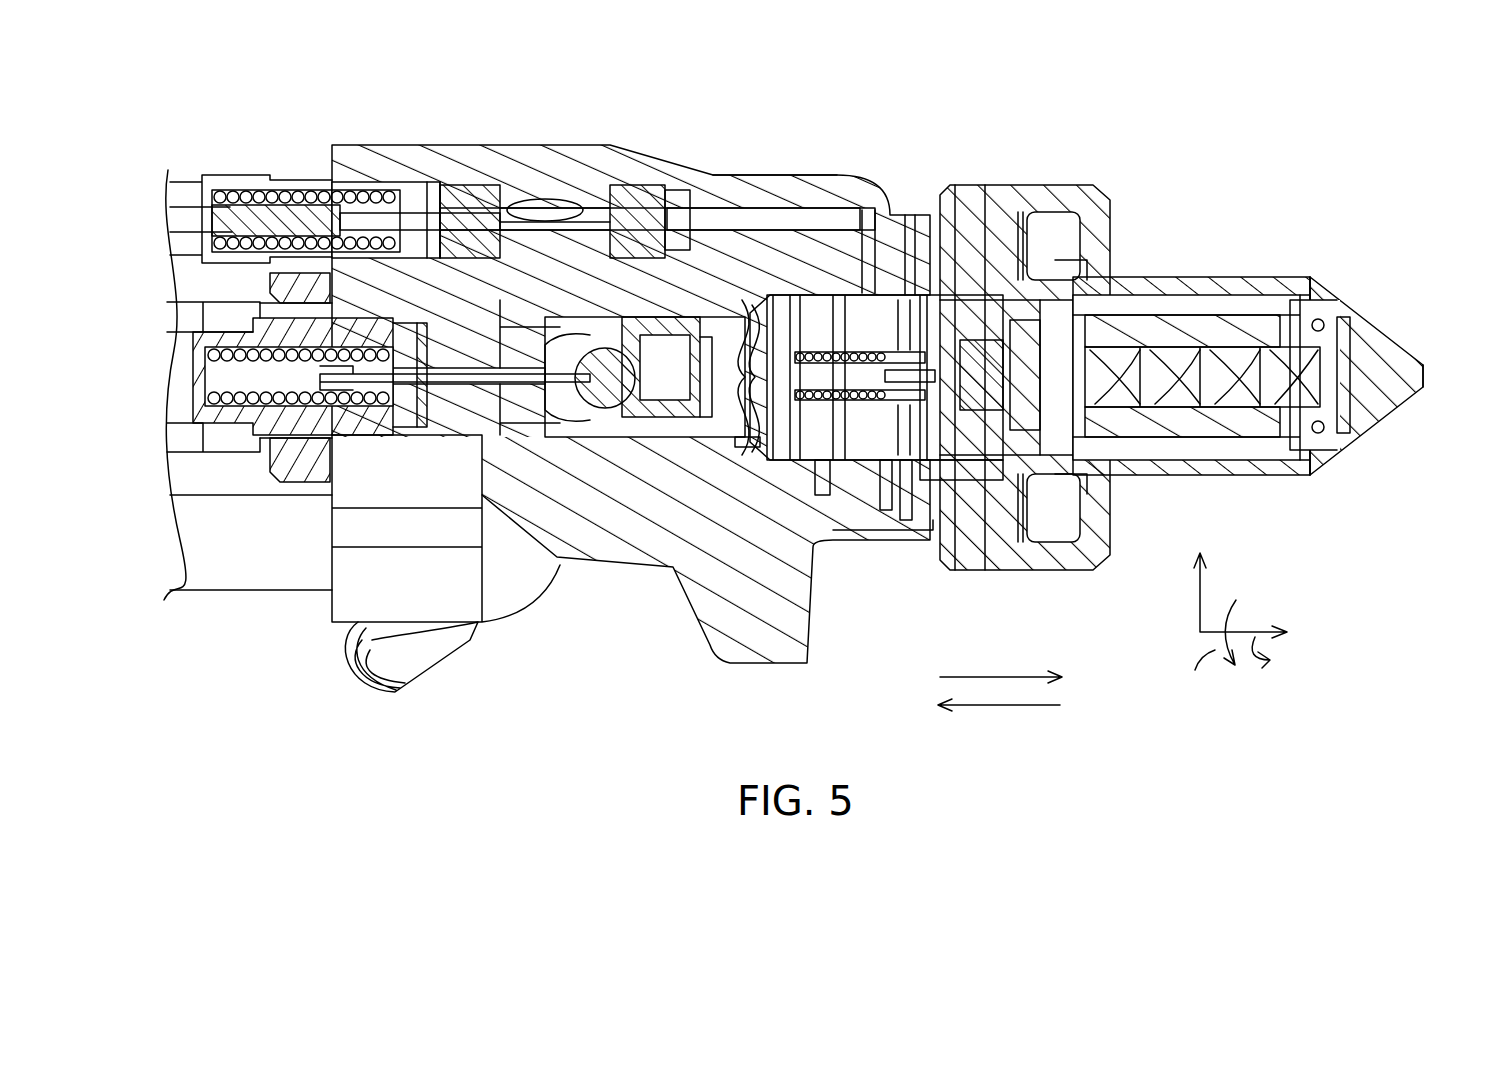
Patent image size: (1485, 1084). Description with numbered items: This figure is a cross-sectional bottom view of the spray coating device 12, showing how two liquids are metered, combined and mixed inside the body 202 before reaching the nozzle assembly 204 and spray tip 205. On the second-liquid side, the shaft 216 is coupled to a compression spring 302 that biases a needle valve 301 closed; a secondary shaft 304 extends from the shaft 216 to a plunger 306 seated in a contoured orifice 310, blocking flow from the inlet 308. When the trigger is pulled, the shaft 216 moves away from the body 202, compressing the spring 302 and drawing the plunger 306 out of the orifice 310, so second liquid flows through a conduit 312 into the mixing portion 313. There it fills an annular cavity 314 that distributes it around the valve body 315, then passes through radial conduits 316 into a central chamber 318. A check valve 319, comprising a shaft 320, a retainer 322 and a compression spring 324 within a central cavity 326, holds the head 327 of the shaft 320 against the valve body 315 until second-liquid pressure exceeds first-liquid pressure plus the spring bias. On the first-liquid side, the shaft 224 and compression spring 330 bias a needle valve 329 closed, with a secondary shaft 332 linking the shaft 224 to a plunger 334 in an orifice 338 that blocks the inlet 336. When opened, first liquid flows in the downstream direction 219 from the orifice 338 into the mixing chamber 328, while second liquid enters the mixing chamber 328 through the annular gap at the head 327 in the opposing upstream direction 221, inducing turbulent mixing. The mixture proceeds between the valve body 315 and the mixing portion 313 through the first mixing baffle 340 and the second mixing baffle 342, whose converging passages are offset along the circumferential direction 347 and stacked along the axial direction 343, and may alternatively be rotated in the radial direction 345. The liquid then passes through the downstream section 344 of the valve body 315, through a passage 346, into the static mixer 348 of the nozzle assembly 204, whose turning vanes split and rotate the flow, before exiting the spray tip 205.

The spray coating device 12 is at (1241, 161).
The body 202 is at (757, 175).
The nozzle assembly 204 is at (1250, 222).
The spray tip 205 is at (1427, 375).
The shaft 216 is at (190, 182).
The downstream direction 219 is at (995, 677).
The upstream direction 221 is at (1005, 705).
The shaft 224 is at (180, 380).
The needle valve 301 is at (625, 182).
The compression spring 302 is at (315, 190).
The secondary shaft 304 is at (512, 210).
The plunger 306 is at (668, 190).
The inlet 308 is at (560, 200).
The orifice 310 is at (712, 208).
The conduit 312 is at (805, 175).
The mixing portion 313 is at (905, 300).
The annular cavity 314 is at (955, 185).
The valve body 315 is at (990, 185).
The conduits 316 is at (940, 480).
The central chamber 318 is at (972, 540).
The check valve 319 is at (836, 530).
The shaft 320 is at (810, 460).
The retainer 322 is at (886, 510).
The compression spring 324 is at (822, 495).
The central cavity 326 is at (908, 215).
The head 327 is at (752, 377).
The mixing chamber 328 is at (742, 447).
The needle valve 329 is at (665, 440).
The compression spring 330 is at (232, 405).
The secondary shaft 332 is at (425, 340).
The plunger 334 is at (550, 335).
The inlet 336 is at (575, 415).
The orifice 338 is at (655, 345).
The first mixing baffle 340 is at (805, 352).
The second mixing baffle 342 is at (868, 210).
The axial direction 343 is at (1283, 656).
The downstream section 344 is at (906, 520).
The radial direction 345 is at (1200, 598).
The passage 346 is at (1020, 320).
The circumferential direction 347 is at (1202, 648).
The static mixer 348 is at (1180, 347).